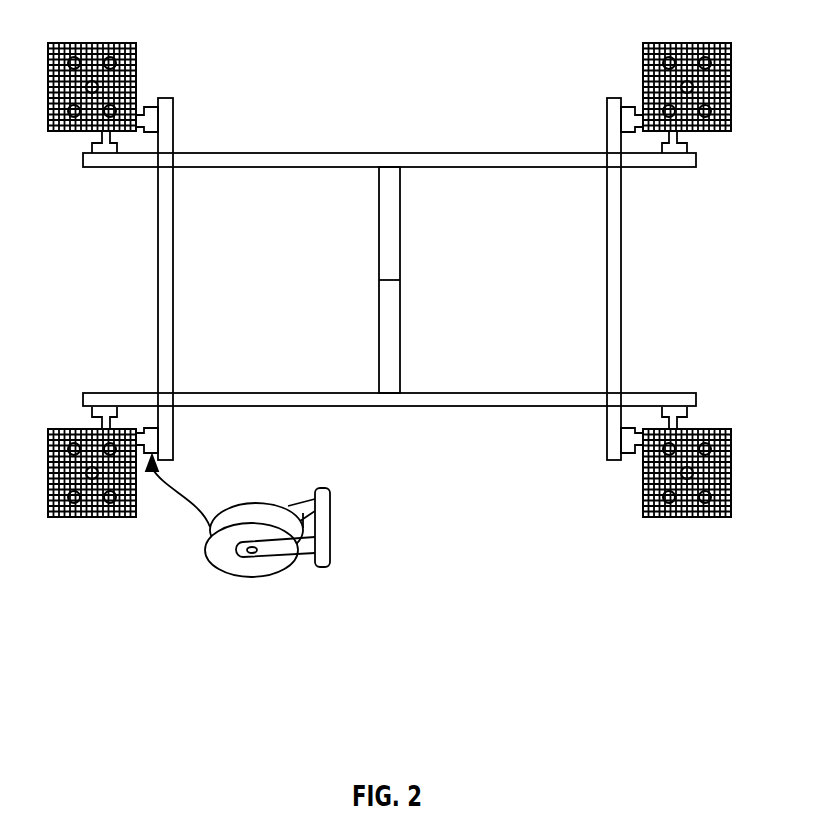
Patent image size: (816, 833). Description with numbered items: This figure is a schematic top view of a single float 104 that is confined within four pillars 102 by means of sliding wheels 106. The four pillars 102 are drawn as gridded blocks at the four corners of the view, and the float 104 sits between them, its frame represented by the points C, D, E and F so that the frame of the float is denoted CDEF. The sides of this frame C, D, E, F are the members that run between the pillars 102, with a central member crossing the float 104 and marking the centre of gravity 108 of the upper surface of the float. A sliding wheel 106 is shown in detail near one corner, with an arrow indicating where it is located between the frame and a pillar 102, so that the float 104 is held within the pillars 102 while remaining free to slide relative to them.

The pillars 102 is at (67, 131).
The float 104 is at (301, 153).
The sliding wheels 106 is at (247, 577).
The centre of gravity 108 is at (393, 282).
The frame of the float C is at (173, 283).
The frame of the float D is at (282, 398).
The frame of the float E is at (533, 160).
The frame of the float F is at (613, 295).